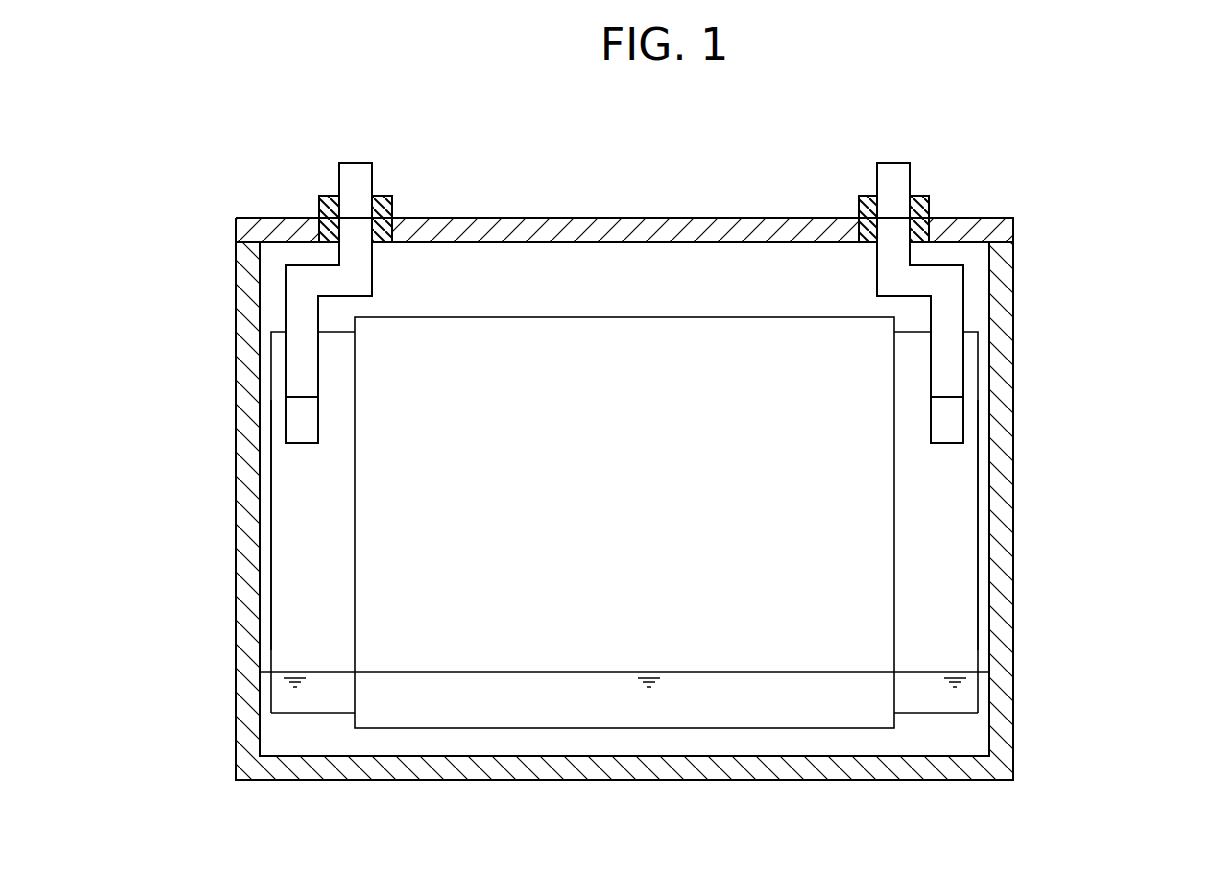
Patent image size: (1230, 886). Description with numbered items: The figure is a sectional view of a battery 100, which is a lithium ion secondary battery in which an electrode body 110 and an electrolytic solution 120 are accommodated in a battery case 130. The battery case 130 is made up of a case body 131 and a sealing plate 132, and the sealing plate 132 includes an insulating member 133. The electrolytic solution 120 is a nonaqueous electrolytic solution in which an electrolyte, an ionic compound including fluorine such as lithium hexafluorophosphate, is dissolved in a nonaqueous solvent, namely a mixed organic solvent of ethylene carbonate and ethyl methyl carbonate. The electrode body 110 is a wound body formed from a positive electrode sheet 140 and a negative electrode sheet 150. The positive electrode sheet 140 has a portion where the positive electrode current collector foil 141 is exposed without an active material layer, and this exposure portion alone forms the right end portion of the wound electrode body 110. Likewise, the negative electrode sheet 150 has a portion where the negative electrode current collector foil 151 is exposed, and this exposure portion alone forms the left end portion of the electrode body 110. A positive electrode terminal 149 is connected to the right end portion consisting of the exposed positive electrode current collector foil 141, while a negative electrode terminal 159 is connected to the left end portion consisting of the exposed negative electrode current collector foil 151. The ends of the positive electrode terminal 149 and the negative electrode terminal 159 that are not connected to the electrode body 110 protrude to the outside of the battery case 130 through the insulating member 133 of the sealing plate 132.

The battery 100 is at (240, 168).
The electrode body 110 is at (745, 612).
The electrolytic solution 120 is at (975, 733).
The battery case 130 is at (1107, 195).
The case body 131 is at (1013, 268).
The sealing plate 132 is at (236, 222).
The insulating member 133 is at (392, 197).
The positive electrode sheet 140 is at (948, 594).
The positive electrode current collector foil 141 is at (943, 507).
The positive electrode terminal 149 is at (897, 164).
The negative electrode sheet 150 is at (310, 589).
The negative electrode current collector foil 151 is at (310, 548).
The negative electrode terminal 159 is at (366, 162).